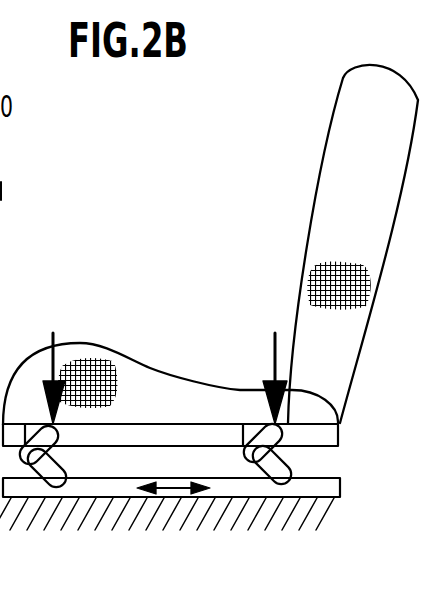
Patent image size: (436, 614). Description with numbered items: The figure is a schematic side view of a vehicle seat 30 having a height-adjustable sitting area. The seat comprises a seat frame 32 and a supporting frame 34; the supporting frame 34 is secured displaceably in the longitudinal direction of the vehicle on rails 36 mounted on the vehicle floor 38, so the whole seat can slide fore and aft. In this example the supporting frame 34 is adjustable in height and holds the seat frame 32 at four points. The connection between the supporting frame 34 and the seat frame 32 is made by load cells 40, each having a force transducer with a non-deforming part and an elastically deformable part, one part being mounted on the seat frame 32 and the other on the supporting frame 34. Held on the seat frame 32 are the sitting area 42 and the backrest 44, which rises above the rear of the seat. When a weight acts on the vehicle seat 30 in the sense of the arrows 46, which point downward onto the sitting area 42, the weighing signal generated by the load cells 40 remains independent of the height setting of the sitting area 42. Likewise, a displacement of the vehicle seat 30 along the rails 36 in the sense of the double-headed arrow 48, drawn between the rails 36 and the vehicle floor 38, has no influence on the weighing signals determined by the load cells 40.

The vehicle seat 30 is at (290, 155).
The seat frame 32 is at (321, 433).
The supporting frame 34 is at (42, 444).
The rails 36 is at (88, 488).
The vehicle floor 38 is at (270, 515).
The load cells 40 is at (255, 428).
The sitting area 42 is at (122, 325).
The backrest 44 is at (272, 219).
The arrows 46 is at (275, 335).
The double-headed arrow 48 is at (175, 491).